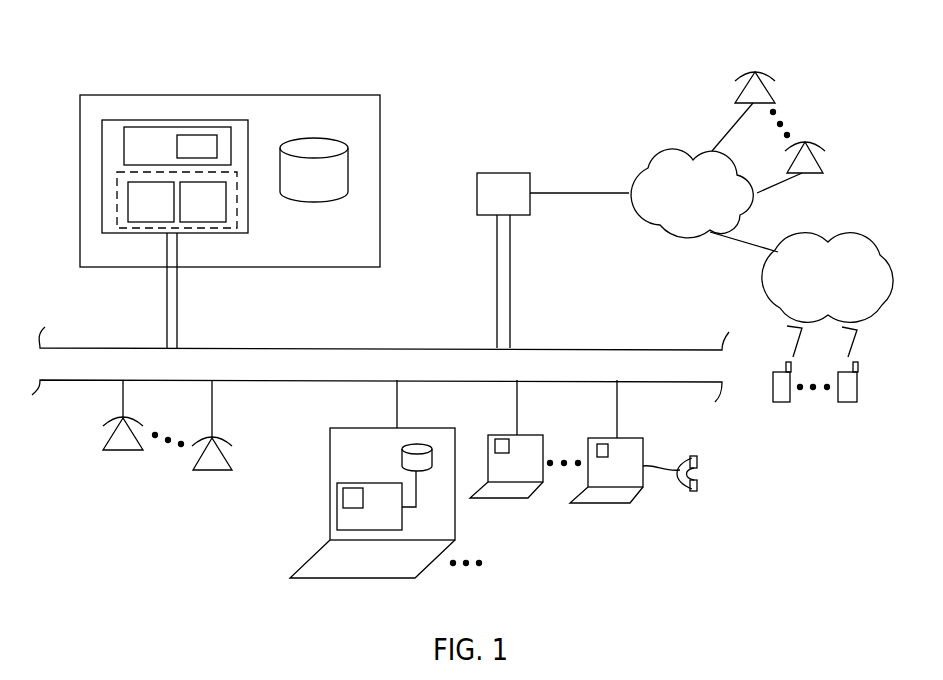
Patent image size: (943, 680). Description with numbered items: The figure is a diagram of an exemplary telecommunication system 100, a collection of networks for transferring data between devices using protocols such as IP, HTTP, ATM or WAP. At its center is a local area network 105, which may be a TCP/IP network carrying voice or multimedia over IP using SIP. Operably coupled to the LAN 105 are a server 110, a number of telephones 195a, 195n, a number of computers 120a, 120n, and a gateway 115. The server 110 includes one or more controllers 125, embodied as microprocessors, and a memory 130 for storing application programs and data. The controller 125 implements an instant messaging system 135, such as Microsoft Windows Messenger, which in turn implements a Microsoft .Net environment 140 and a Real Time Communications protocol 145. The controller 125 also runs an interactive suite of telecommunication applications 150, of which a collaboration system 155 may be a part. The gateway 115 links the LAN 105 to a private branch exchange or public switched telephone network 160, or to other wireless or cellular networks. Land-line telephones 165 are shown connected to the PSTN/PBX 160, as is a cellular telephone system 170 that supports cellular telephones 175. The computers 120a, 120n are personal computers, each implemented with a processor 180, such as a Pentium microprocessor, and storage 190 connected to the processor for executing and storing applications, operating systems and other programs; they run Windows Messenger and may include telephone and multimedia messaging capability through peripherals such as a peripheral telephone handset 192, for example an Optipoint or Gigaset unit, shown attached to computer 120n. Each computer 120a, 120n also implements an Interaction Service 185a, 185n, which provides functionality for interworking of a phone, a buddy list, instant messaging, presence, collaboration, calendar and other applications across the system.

The telecommunication system 100 is at (30, 51).
The local area network 105 is at (435, 375).
The server 110 is at (283, 96).
The gateway 115 is at (515, 201).
The computer 120a is at (363, 579).
The computer 120n is at (585, 503).
The controller 125 is at (200, 121).
The memory 130 is at (302, 138).
The instant messaging system 135 is at (148, 229).
The Microsoft .Net environment 140 is at (128, 198).
The Real Time Communications protocol 145 is at (226, 205).
The interactive suite of telecommunication applications 150 is at (160, 155).
The collaboration system 155 is at (209, 155).
The PSTN/PBX 160 is at (745, 211).
The land-line telephones 165 is at (806, 105).
The cellular telephone system 170 is at (818, 233).
The cellular telephones 175 is at (804, 424).
The processor 180 is at (343, 483).
The Interaction Service 185a is at (345, 509).
The Interaction Service 185n is at (600, 457).
The storage 190 is at (426, 471).
The telephone handset 192 is at (680, 490).
The telephone 195a is at (118, 451).
The telephone 195n is at (208, 472).